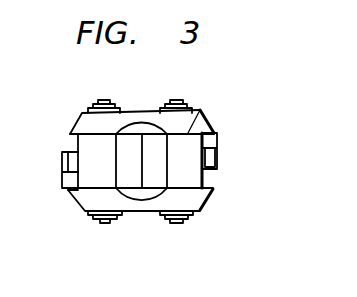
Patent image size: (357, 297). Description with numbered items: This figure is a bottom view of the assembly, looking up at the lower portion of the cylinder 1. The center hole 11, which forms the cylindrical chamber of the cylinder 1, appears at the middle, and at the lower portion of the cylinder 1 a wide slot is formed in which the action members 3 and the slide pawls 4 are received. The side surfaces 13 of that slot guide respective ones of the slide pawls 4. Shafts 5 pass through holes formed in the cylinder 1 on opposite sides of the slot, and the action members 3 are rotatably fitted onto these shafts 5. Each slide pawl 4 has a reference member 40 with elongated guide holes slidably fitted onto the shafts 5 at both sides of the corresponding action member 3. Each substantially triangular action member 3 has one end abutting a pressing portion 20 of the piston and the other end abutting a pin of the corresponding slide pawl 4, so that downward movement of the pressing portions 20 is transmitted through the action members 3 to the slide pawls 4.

The cylinder 1 is at (80, 198).
The action member 3 is at (215, 168).
The slide pawl 4 is at (193, 182).
The shaft 5 is at (105, 223).
The center hole 11 is at (138, 200).
The side surface 13 is at (200, 109).
The pressing portion 20 is at (218, 156).
The reference member 40 is at (62, 178).